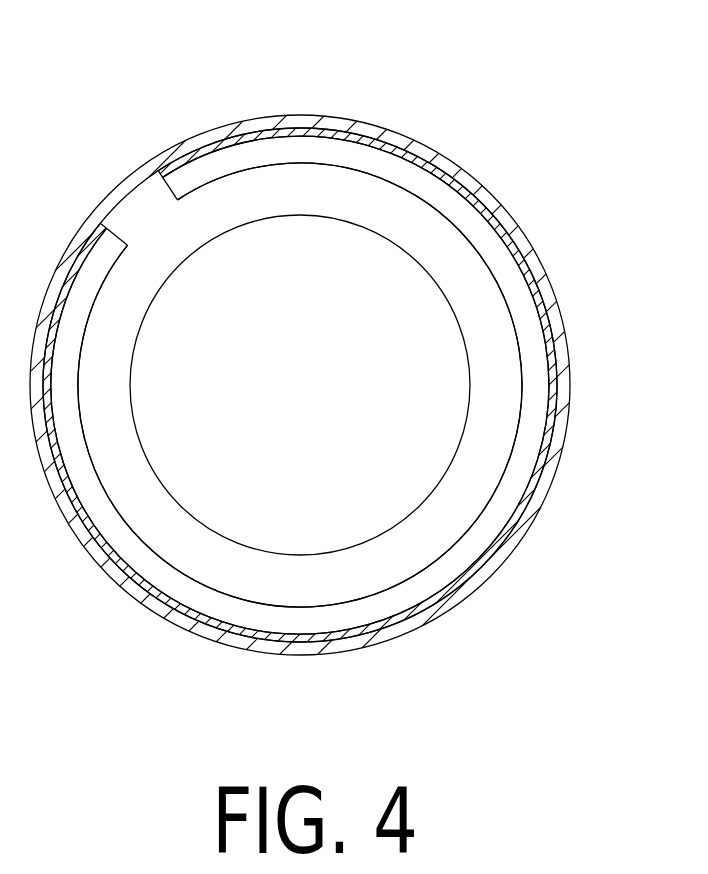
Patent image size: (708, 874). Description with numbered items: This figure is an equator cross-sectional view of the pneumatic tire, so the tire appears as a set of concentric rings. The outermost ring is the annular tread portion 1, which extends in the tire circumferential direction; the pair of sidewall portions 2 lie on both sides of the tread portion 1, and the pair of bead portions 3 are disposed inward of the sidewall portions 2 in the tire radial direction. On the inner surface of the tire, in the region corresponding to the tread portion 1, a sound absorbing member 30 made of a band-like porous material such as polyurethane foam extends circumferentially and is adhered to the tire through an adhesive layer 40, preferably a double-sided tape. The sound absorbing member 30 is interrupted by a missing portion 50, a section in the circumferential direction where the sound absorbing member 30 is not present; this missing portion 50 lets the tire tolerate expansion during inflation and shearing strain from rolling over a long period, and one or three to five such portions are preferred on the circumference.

The tread portion 1 is at (362, 130).
The sidewall portion 2 is at (432, 223).
The bead portion 3 is at (418, 250).
The sound absorbing member 30 is at (300, 148).
The adhesive layer 40 is at (234, 135).
The missing portion 50 is at (140, 210).